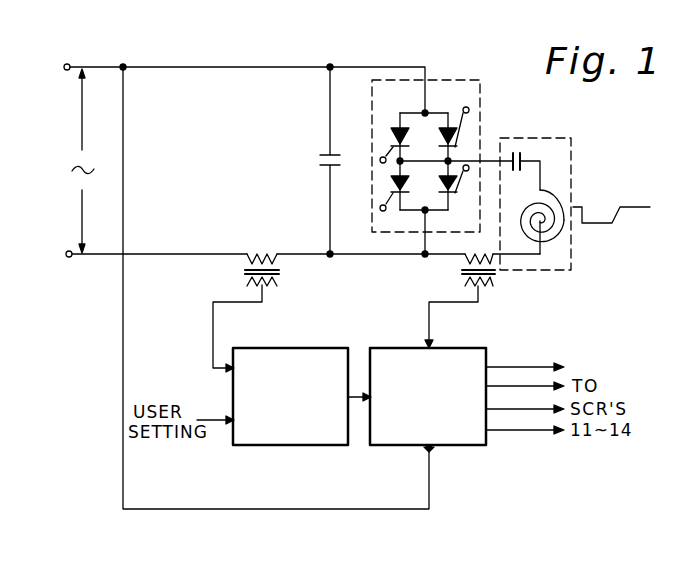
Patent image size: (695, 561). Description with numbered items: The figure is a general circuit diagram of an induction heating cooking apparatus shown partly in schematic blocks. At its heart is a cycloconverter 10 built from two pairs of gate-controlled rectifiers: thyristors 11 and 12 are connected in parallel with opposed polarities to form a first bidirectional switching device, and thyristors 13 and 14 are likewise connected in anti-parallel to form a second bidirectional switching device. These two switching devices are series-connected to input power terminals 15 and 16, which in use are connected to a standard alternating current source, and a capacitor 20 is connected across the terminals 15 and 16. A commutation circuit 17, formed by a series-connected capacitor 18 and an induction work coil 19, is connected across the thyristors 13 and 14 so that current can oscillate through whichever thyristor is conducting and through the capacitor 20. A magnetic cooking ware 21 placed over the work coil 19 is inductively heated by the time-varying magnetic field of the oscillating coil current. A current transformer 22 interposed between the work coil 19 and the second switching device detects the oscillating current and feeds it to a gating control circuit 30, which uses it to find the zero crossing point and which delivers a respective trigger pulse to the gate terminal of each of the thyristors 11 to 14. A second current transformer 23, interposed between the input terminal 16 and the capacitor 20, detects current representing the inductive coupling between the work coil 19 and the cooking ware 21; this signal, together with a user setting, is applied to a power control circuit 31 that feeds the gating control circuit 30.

The cycloconverter 10 is at (455, 80).
The thyristor 11 is at (392, 133).
The thyristor 12 is at (455, 134).
The thyristor 13 is at (391, 181).
The thyristor 14 is at (457, 183).
The input power terminal 15 is at (66, 71).
The input power terminal 16 is at (68, 251).
The commutation circuit 17 is at (540, 138).
The capacitor 18 is at (518, 148).
The induction work coil 19 is at (554, 238).
The capacitor 20 is at (319, 160).
The magnetic cooking ware 21 is at (628, 206).
The current transformer 22 is at (488, 287).
The second current transformer 23 is at (272, 286).
The gating control circuit 30 is at (468, 446).
The power control circuit 31 is at (297, 446).